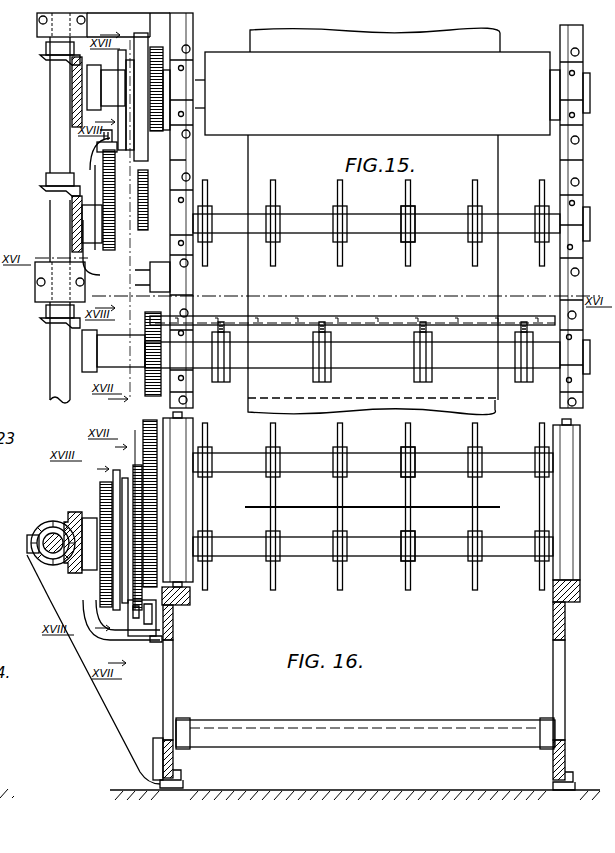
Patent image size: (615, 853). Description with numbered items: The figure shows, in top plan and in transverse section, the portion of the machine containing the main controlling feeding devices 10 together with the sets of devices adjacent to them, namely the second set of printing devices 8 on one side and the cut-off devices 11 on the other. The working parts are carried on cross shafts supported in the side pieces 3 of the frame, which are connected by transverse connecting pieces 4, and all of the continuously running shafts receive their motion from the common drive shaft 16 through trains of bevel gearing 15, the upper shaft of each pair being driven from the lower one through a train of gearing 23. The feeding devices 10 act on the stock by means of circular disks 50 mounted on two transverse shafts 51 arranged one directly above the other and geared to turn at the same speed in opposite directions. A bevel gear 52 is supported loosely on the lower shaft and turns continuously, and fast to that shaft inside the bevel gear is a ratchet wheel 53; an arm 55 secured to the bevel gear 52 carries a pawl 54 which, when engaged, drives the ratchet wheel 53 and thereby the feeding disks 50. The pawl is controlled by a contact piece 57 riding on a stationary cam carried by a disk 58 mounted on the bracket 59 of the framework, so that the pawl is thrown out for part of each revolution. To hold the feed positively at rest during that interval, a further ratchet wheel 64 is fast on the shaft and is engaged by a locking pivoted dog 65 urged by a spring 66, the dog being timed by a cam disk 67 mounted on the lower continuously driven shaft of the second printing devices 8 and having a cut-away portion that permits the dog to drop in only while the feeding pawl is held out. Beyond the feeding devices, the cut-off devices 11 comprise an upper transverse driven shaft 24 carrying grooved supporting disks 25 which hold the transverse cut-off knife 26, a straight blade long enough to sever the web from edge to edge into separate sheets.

In FIG. 15, the side pieces 3 is at (194, 25).
In FIG. 16, the side pieces 3 is at (175, 623).
In FIG. 16, the transverse connecting pieces 4 is at (372, 742).
In FIG. 15, the printing devices 8 is at (377, 81).
In FIG. 15, the controlling feeding devices 10 is at (376, 234).
In FIG. 16, the controlling feeding devices 10 is at (373, 504).
In FIG. 15, the cut-off devices 11 is at (367, 383).
In FIG. 15, the bevel gearing 15 is at (72, 70).
In FIG. 15, the shaft 16 is at (62, 119).
In FIG. 16, the shaft 16 is at (52, 522).
In FIG. 15, the train of gearing 23 is at (164, 90).
In FIG. 16, the train of gearing 23 is at (150, 500).
In FIG. 15, the upper transverse driven shaft 24 is at (352, 355).
In FIG. 15, the grooved supporting disks 25 is at (222, 356).
In FIG. 15, the transverse cut-off knife 26 is at (368, 308).
In FIG. 15, the circular disks 50 is at (405, 198).
In FIG. 16, the circular disks 50 is at (405, 489).
In FIG. 15, the transverse shafts 51 is at (345, 222).
In FIG. 16, the transverse shafts 51 is at (345, 463).
In FIG. 15, the bevel gear 52 is at (72, 212).
In FIG. 16, the bevel gear 52 is at (82, 512).
In FIG. 15, the ratchet wheel 53 is at (110, 239).
In FIG. 16, the ratchet wheel 53 is at (97, 600).
In FIG. 15, the pawl 54 is at (97, 151).
In FIG. 15, the arm 55 is at (92, 169).
In FIG. 15, the contact piece 57 is at (126, 152).
In FIG. 15, the disk 58 is at (128, 174).
In FIG. 16, the disk 58 is at (120, 480).
In FIG. 16, the bracket 59 is at (146, 640).
In FIG. 15, the ratchet wheel 64 is at (162, 280).
In FIG. 16, the ratchet wheel 64 is at (137, 440).
In FIG. 15, the locking pivoted dog 65 is at (160, 136).
In FIG. 16, the locking pivoted dog 65 is at (165, 630).
In FIG. 16, the spring 66 is at (162, 640).
In FIG. 15, the cam disk 67 is at (128, 70).